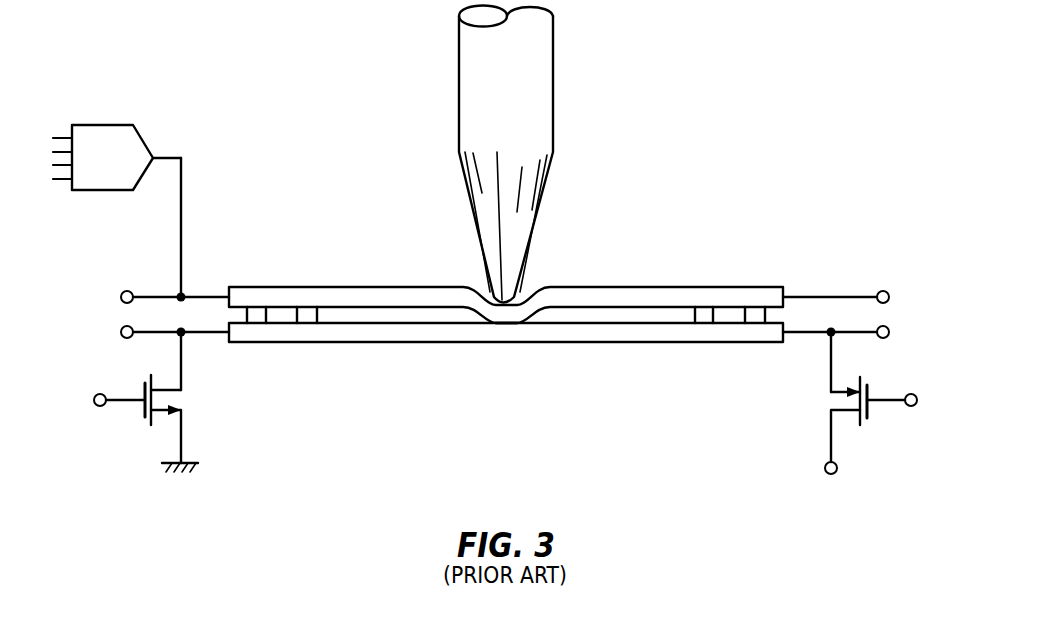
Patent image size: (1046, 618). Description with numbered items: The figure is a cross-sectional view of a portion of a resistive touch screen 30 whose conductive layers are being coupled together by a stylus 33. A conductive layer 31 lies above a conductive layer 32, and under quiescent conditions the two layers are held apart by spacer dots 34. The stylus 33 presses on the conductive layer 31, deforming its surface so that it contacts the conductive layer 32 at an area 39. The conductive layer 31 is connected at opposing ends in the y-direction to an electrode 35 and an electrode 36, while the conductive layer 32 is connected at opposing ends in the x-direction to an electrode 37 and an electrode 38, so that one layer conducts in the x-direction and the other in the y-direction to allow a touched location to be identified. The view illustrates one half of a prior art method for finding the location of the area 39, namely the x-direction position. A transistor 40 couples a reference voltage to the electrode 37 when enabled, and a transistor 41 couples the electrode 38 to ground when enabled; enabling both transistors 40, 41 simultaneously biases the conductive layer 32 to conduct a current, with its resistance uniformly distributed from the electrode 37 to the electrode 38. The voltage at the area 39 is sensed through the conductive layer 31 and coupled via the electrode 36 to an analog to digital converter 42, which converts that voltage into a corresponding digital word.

The resistive touch screen 30 is at (719, 108).
The conductive layer 31 is at (648, 295).
The conductive layer 32 is at (608, 333).
The stylus 33 is at (535, 82).
The spacer dots 34 is at (256, 313).
The electrode 35 is at (890, 296).
The electrode 36 is at (120, 296).
The electrode 37 is at (890, 334).
The electrode 38 is at (120, 334).
The area 39 is at (505, 325).
The transistor 40 is at (887, 427).
The transistor 41 is at (123, 427).
The analog to digital converter 42 is at (117, 157).